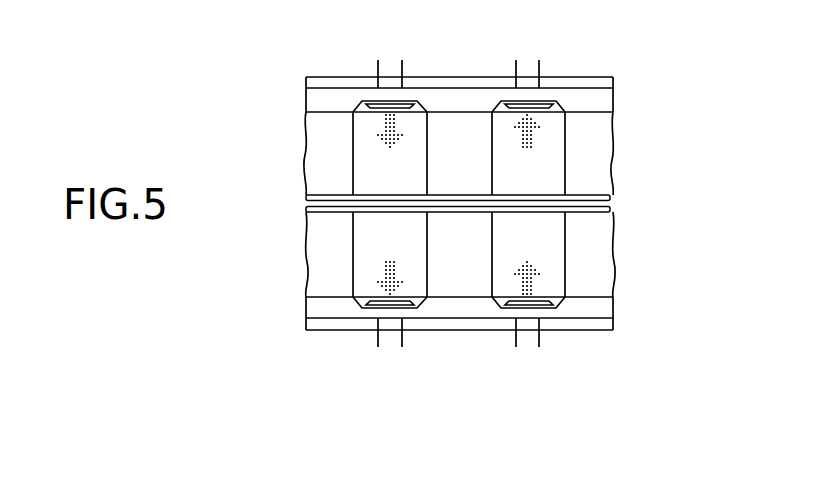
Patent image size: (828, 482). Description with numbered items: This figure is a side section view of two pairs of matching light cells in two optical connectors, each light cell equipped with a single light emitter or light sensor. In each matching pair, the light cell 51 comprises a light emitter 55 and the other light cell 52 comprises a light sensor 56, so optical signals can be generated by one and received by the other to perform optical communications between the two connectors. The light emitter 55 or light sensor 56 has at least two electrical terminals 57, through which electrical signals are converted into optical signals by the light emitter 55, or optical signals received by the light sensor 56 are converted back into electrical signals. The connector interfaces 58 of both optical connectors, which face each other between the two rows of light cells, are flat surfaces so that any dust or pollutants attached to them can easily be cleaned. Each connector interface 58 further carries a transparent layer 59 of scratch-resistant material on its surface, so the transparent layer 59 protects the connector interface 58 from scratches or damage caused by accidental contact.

The light cell 51 is at (352, 153).
The light cell 52 is at (352, 257).
The light emitter 55 is at (407, 101).
The light sensor 56 is at (408, 308).
The electrical terminals 57 is at (378, 60).
The connector interface 58 is at (610, 197).
The transparent layer 59 is at (588, 195).